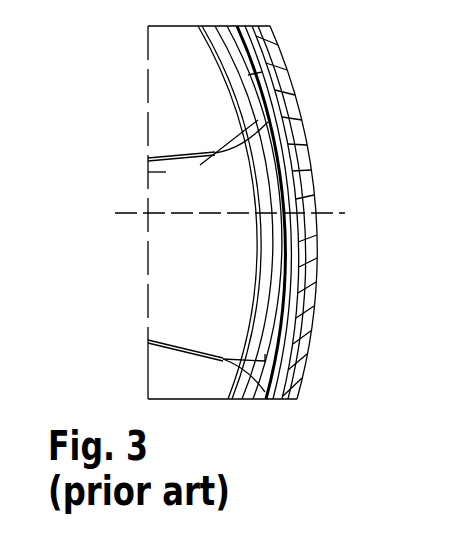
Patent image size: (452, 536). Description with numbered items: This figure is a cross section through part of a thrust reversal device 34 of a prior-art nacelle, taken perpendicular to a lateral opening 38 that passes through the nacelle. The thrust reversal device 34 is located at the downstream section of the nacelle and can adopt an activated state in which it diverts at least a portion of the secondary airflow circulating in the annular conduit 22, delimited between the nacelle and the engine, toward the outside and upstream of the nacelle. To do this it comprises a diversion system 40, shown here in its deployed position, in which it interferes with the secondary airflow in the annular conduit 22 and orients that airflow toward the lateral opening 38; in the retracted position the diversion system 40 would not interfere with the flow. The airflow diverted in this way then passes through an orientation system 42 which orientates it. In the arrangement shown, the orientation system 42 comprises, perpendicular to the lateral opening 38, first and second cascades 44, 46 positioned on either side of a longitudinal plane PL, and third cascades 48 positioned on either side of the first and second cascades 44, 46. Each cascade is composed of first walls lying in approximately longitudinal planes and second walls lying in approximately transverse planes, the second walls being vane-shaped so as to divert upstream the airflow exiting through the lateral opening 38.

The annular conduit 22 is at (150, 157).
The thrust reversal device 34 is at (345, 148).
The lateral opening 38 is at (297, 231).
The diversion system 40 is at (142, 103).
The orientation system 42 is at (300, 410).
The first cascade 44 is at (300, 121).
The second cascade 46 is at (290, 327).
The third cascades 48 is at (275, 55).
The longitudinal plane PL is at (115, 213).